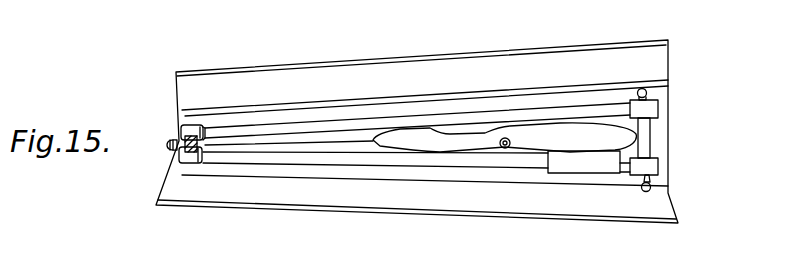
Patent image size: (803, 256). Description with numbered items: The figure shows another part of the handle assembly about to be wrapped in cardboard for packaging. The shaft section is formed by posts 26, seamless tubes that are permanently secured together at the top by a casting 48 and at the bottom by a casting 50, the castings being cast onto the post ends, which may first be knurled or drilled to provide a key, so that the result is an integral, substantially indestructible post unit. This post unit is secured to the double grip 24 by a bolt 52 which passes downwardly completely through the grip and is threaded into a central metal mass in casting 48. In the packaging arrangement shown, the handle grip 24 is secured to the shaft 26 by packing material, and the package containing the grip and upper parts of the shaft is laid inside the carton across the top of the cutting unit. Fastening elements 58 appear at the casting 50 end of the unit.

The double grip 24 is at (531, 135).
The posts 26 is at (303, 157).
The casting 48 is at (184, 154).
The casting 50 is at (649, 133).
The bolt 52 is at (172, 139).
The bolt 58 is at (650, 93).